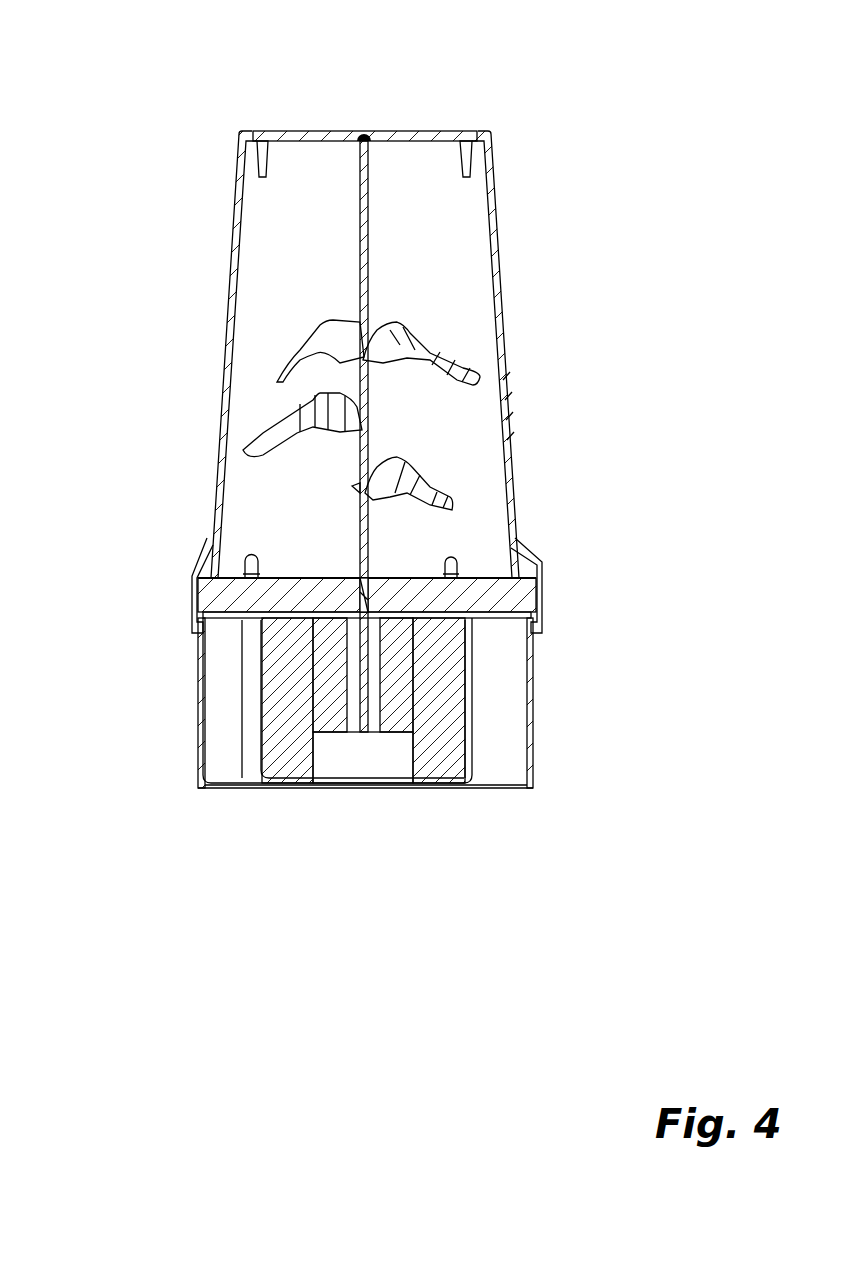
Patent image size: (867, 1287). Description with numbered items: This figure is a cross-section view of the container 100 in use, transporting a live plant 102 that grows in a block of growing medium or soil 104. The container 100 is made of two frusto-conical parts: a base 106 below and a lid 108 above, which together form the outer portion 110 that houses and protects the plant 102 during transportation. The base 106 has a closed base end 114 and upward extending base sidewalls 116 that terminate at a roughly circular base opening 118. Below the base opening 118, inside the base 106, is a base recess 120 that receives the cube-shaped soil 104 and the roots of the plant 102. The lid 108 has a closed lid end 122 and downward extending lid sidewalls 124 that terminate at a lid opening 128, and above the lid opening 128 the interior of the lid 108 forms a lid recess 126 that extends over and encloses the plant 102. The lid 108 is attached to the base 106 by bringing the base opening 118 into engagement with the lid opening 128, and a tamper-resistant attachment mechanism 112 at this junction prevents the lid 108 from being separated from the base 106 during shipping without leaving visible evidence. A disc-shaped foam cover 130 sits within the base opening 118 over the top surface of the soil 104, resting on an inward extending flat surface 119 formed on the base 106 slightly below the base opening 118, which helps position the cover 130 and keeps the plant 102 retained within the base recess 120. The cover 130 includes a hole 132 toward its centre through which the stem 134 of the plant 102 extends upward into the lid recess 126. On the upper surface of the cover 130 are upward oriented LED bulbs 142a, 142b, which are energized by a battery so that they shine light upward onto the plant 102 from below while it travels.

The container 100 is at (565, 168).
The plant 102 is at (403, 332).
The growing medium or soil 104 is at (395, 700).
The base 106 is at (200, 725).
The lid 108 is at (230, 247).
The outer portion 110 is at (498, 257).
The tamper-resistant attachment mechanism 112 is at (195, 632).
The closed base end 114 is at (488, 786).
The base sidewalls 116 is at (535, 740).
The base opening 118 is at (543, 612).
The flat surface 119 is at (200, 577).
The base recess 120 is at (340, 768).
The closed lid end 122 is at (317, 132).
The lid sidewalls 124 is at (515, 410).
The lid recess 126 is at (408, 172).
The lid opening 128 is at (543, 595).
The cover 130 is at (388, 587).
The hole 132 is at (350, 600).
The stem 134 is at (362, 543).
The LED bulb 142a is at (253, 567).
The LED bulb 142b is at (455, 570).